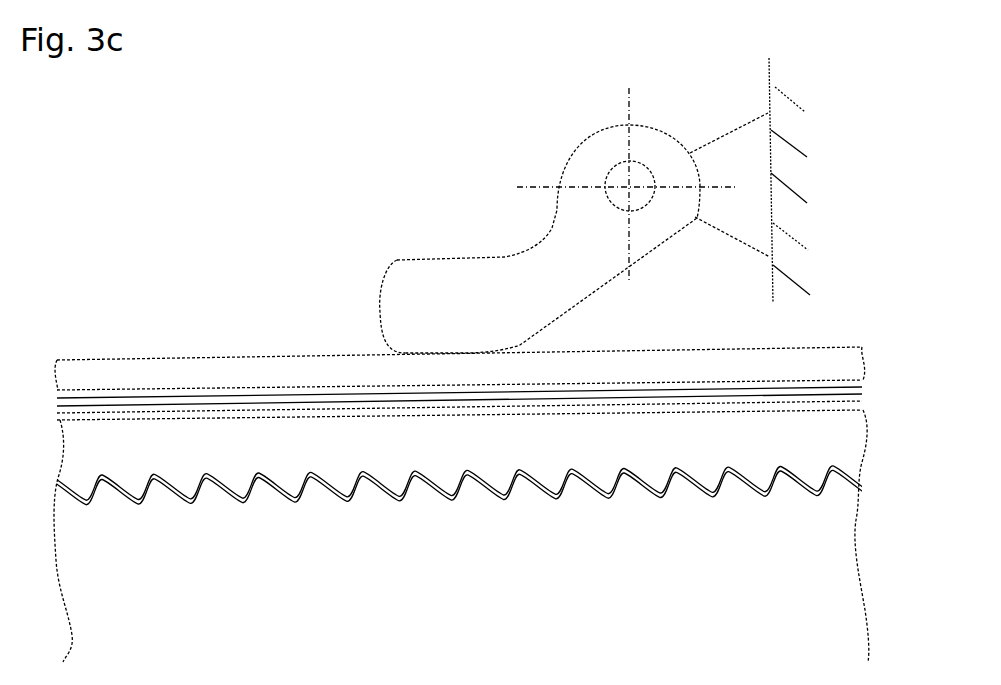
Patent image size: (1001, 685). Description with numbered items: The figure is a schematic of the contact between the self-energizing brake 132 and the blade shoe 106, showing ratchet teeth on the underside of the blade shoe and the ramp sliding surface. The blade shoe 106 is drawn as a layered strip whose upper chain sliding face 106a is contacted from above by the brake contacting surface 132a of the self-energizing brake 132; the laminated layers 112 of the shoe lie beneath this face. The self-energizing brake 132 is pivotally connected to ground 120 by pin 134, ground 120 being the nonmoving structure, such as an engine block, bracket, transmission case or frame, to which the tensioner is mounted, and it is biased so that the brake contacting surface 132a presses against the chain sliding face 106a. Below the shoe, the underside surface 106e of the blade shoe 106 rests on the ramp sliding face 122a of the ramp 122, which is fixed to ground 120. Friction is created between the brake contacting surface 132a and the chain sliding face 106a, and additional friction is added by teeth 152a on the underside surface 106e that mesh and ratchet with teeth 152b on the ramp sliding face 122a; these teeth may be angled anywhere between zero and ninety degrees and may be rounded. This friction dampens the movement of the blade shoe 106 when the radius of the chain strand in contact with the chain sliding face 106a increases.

The blade shoe 106 is at (476, 343).
The chain sliding face 106a is at (313, 355).
The underside surface 106e is at (459, 509).
The belt layers 112 is at (845, 400).
The ground 120 is at (795, 95).
The ramp 122 is at (459, 536).
The ramp sliding face 122a is at (459, 509).
The self-energizing brake 132 is at (529, 220).
The brake contacting surface 132a is at (450, 353).
The pin 134 is at (618, 175).
The teeth 152a is at (435, 475).
The teeth 152b is at (480, 488).